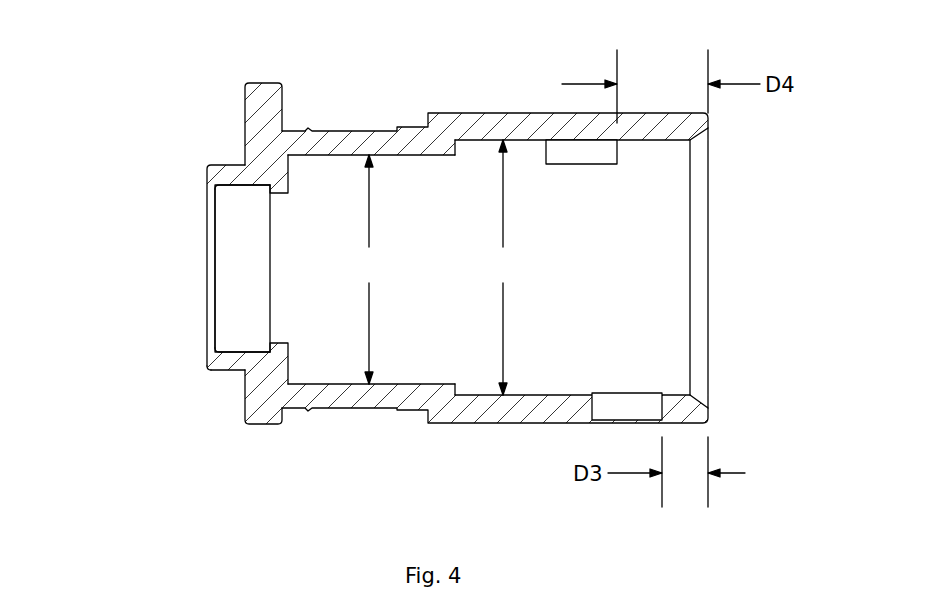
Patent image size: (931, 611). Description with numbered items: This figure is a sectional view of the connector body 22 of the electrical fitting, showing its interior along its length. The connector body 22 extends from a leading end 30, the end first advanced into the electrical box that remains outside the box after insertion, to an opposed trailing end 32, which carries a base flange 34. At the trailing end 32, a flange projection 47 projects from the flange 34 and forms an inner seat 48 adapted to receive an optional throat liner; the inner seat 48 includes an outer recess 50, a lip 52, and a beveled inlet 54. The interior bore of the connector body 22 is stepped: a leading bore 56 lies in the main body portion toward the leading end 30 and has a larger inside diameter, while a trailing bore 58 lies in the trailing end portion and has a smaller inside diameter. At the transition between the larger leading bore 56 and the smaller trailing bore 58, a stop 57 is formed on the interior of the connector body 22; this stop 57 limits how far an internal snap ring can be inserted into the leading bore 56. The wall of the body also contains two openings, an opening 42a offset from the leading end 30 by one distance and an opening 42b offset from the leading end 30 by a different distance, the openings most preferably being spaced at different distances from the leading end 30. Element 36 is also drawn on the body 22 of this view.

The connector body 22 is at (135, 103).
The leading end 30 is at (712, 272).
The trailing end 32 is at (207, 262).
The base flange 34 is at (262, 82).
The body 36 is at (353, 130).
The opening 42a is at (647, 391).
The opening 42b is at (580, 166).
The flange projection 47 is at (231, 374).
The inner seat 48 is at (243, 278).
The outer recess 50 is at (226, 186).
The lip 52 is at (274, 195).
The beveled inlet 54 is at (215, 360).
The leading bore 56 is at (549, 267).
The stop 57 is at (457, 149).
The trailing bore 58 is at (396, 269).